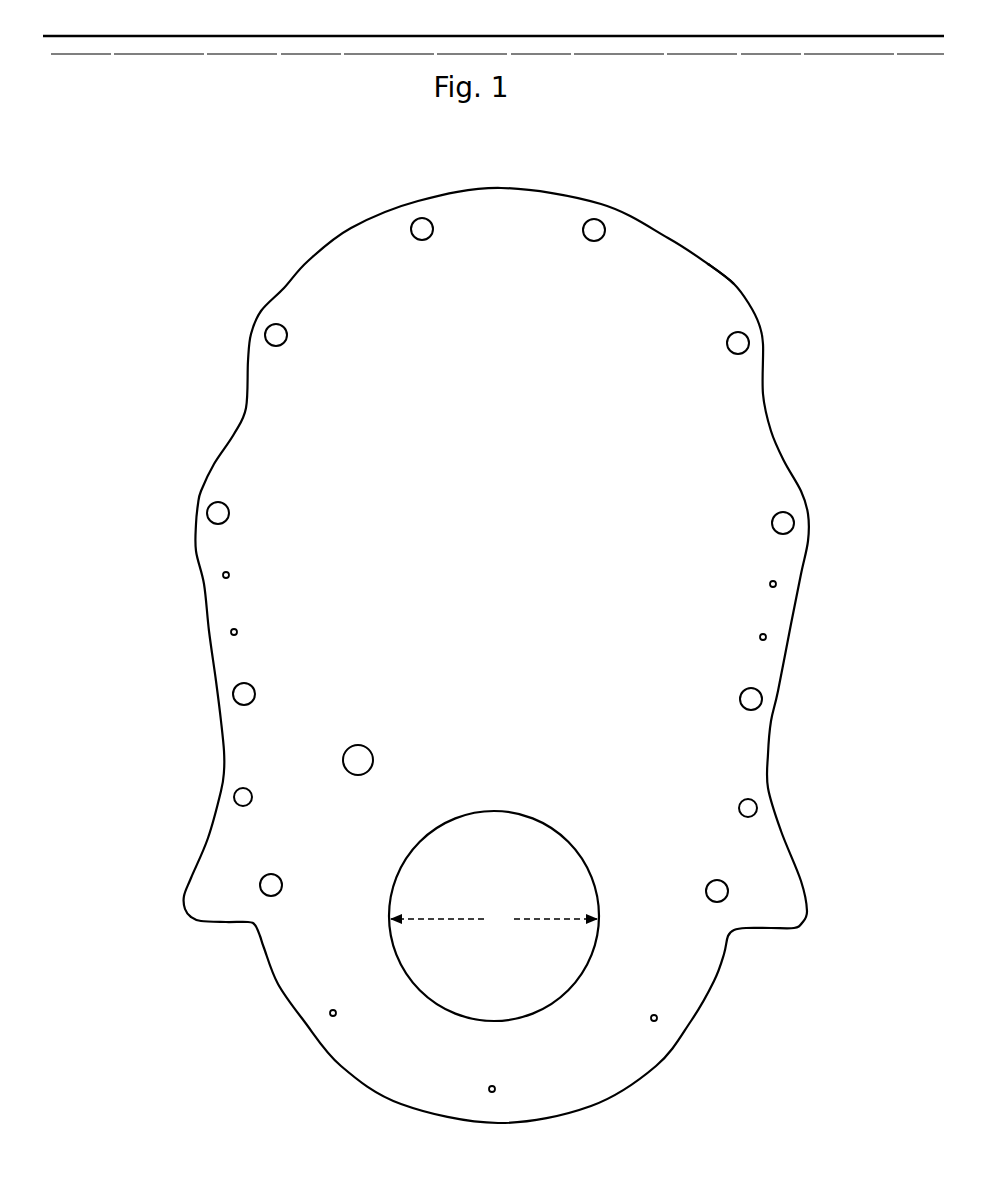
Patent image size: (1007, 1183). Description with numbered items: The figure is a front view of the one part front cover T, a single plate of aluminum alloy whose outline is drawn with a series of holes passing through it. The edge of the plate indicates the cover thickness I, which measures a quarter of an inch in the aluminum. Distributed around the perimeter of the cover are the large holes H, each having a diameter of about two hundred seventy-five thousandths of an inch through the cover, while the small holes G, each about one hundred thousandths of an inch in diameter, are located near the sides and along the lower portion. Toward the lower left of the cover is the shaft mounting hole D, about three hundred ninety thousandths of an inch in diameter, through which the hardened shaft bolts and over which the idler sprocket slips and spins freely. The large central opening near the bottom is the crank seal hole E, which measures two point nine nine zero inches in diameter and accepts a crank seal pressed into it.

The one part front cover T is at (327, 277).
The cover thickness I is at (747, 293).
The large hole diameters H is at (208, 498).
The small hole diameters G is at (217, 573).
The shaft mounting hole D is at (338, 787).
The crank seal hole E is at (602, 948).